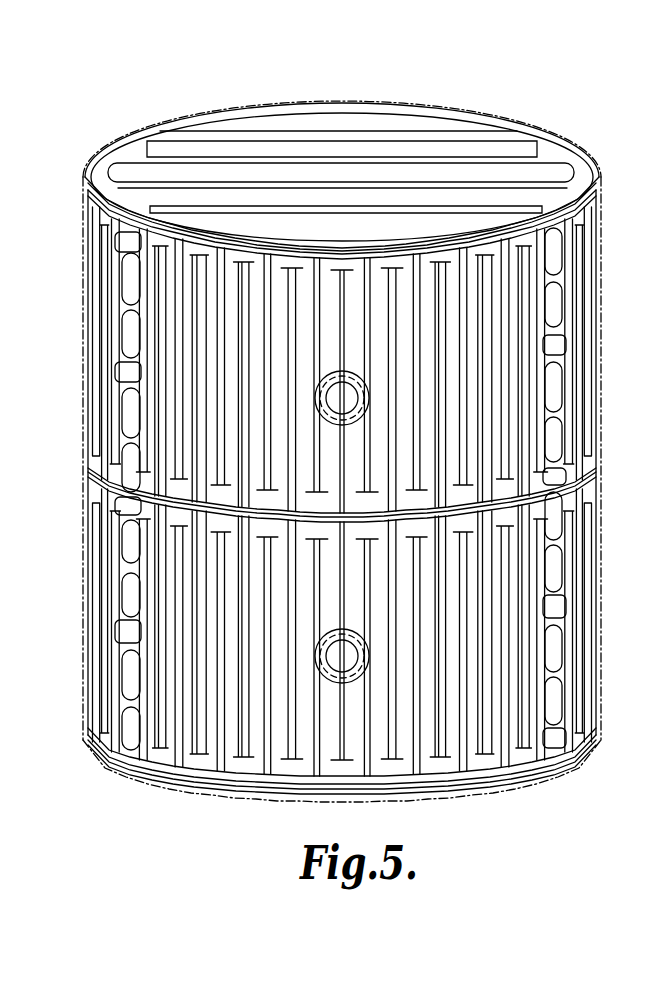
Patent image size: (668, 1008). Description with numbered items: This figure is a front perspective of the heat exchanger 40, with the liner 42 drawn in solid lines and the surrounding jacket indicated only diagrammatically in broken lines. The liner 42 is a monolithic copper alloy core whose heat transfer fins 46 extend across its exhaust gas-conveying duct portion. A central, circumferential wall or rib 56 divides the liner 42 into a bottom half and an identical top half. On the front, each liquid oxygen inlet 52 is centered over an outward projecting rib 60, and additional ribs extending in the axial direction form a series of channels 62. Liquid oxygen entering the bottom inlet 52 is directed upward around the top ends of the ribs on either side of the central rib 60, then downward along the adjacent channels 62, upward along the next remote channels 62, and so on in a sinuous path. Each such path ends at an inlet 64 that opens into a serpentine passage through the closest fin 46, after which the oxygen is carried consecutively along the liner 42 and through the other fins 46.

The heat exchanger 40 is at (83, 154).
The liner 42 is at (167, 131).
The heat transfer fins 46 is at (424, 208).
The liquid oxygen inlet 52 is at (358, 401).
The central circumferential rib 56 is at (519, 492).
The outward projecting rib 60 is at (342, 584).
The channels 62 is at (354, 571).
The inlet 64 is at (142, 506).